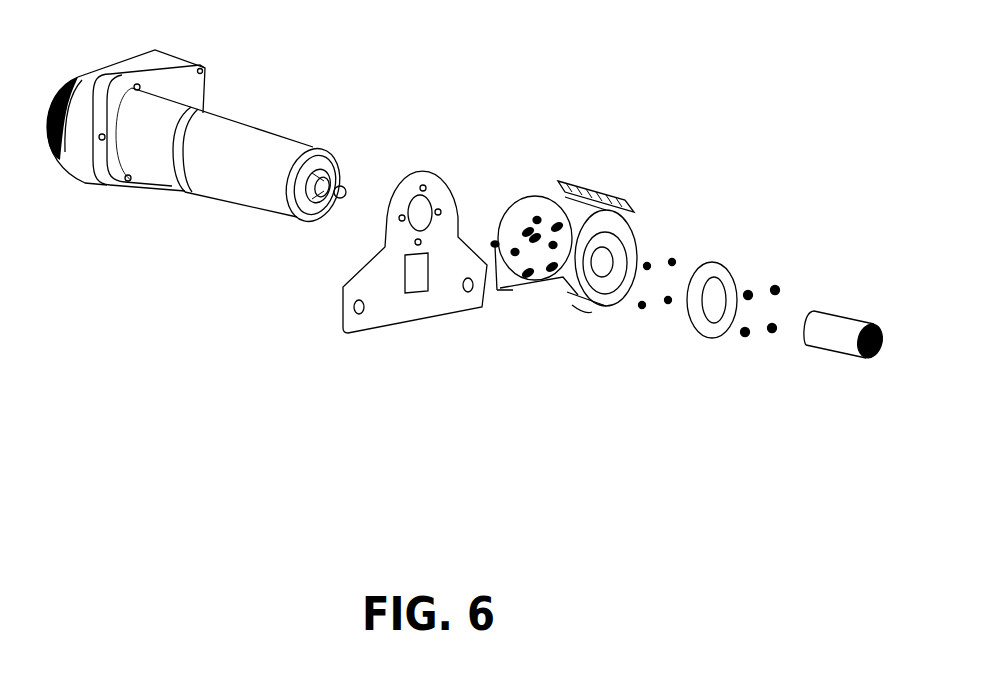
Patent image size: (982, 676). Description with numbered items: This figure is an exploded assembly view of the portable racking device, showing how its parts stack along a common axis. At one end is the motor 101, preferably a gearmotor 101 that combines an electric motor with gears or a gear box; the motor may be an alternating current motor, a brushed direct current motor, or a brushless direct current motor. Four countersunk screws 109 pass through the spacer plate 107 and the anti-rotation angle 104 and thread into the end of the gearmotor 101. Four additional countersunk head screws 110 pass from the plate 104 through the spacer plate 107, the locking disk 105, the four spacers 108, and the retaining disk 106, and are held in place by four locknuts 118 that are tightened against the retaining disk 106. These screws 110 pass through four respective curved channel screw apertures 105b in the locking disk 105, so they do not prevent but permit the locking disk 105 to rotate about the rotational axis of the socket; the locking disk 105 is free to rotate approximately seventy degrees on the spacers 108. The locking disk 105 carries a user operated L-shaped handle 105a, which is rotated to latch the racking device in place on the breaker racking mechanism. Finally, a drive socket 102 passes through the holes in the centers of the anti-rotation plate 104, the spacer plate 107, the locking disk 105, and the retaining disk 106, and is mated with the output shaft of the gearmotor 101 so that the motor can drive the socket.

The gearmotor 101 is at (260, 188).
The drive socket 102 is at (830, 345).
The anti-rotation angle 104 is at (392, 308).
The locking disk 105 is at (580, 298).
The L-shaped handle 105a is at (614, 197).
The curved channel screw apertures 105b is at (617, 240).
The retaining disk 106 is at (727, 262).
The spacer plate 107 is at (513, 287).
The spacers 108 is at (673, 258).
The countersunk screws 109 is at (550, 196).
The countersunk head screws 110 is at (495, 243).
The locknuts 118 is at (778, 289).